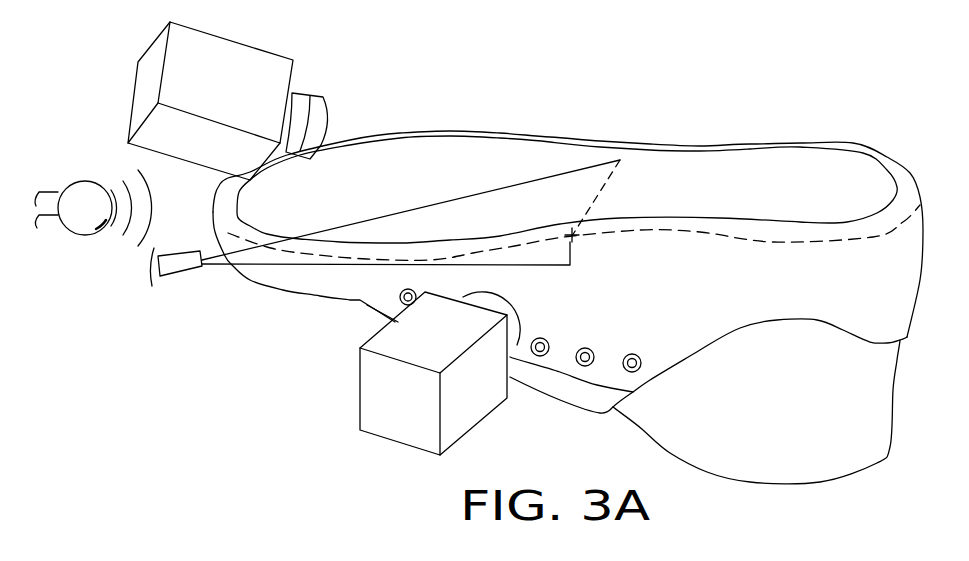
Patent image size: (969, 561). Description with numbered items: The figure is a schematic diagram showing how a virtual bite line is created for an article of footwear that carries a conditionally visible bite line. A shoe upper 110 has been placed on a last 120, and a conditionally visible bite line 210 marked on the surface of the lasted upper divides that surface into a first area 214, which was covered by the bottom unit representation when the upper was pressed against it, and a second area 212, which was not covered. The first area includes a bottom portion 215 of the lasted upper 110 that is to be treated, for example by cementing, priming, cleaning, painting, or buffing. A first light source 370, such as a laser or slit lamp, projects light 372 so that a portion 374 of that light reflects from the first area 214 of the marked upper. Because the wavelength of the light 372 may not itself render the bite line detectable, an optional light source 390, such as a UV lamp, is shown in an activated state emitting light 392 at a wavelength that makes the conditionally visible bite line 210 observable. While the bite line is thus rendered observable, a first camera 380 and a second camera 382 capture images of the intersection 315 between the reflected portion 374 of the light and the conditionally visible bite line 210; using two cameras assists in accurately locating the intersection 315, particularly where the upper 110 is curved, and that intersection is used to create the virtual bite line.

The shoe upper 110 is at (847, 312).
The last 120 is at (833, 450).
The conditionally visible bite line 210 is at (777, 243).
The second area 212 is at (332, 278).
The first area 214 is at (441, 159).
The bottom portion 215 is at (750, 188).
The intersection 315 is at (587, 250).
The first light source 370 is at (175, 270).
The light 372 is at (413, 208).
The portion of the light 374 is at (605, 178).
The first camera 380 is at (265, 53).
The second camera 382 is at (412, 437).
The optional light source 390 is at (77, 188).
The light 392 is at (145, 188).